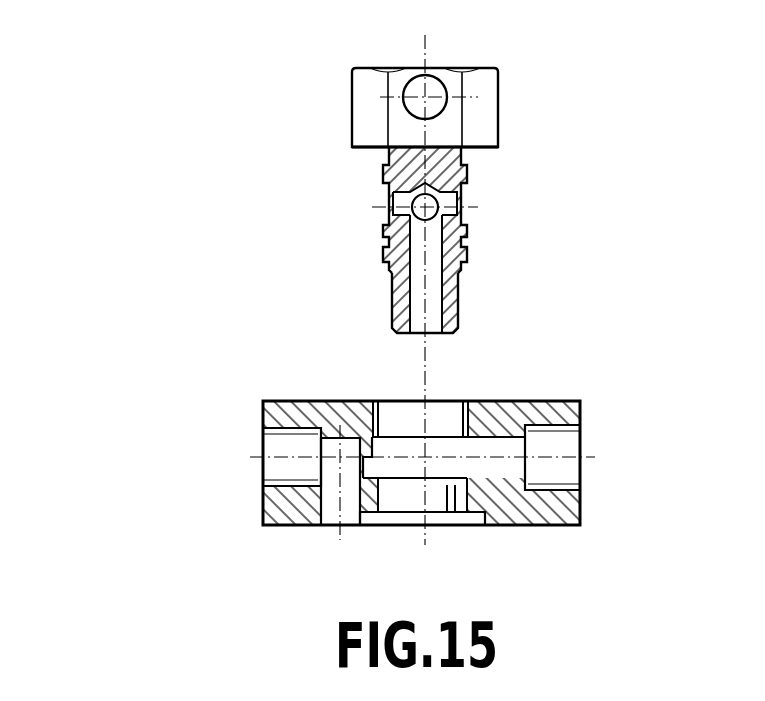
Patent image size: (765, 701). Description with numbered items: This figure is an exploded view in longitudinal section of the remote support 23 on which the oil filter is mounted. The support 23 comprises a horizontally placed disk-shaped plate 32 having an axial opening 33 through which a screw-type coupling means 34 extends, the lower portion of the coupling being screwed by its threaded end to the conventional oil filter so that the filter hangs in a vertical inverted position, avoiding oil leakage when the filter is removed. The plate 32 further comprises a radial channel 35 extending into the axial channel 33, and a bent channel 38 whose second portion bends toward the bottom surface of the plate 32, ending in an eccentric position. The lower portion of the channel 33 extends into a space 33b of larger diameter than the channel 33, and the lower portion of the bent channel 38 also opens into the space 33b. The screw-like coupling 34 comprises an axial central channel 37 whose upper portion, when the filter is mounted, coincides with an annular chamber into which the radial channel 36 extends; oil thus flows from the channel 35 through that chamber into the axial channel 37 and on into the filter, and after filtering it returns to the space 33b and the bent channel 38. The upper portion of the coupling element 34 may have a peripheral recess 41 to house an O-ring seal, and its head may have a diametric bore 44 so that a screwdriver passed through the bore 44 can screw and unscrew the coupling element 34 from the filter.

The remote support 23 is at (192, 195).
The disk-shaped plate 32 is at (326, 400).
The axial opening 33 is at (443, 425).
The space 33b is at (475, 524).
The screw-type coupling means 34 is at (313, 200).
The radial channel 35 is at (557, 445).
The radial channel 36 is at (460, 222).
The axial central channel 37 is at (410, 260).
The bent channel 38 is at (347, 492).
The peripheral recess 41 is at (386, 240).
The diametric bore 44 is at (432, 90).